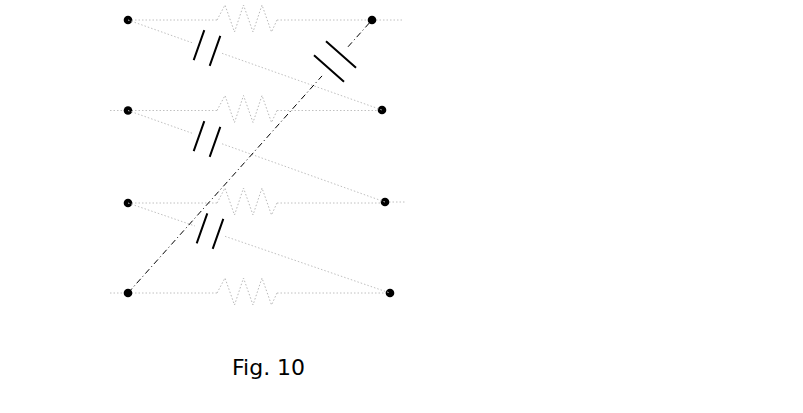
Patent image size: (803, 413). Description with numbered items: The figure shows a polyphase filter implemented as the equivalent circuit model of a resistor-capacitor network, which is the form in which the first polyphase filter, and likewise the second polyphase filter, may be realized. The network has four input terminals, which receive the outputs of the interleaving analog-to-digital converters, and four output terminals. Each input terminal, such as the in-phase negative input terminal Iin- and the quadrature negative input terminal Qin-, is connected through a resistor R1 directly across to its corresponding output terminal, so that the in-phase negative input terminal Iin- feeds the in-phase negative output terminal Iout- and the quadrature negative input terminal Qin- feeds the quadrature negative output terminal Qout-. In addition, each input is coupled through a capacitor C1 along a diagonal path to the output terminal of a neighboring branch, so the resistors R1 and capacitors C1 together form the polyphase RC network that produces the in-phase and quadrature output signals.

The resistor R1 is at (266, 163).
The capacitor C1 is at (259, 156).
The in-phase negative input terminal Iin- is at (95, 203).
The quadrature negative input terminal Qin- is at (91, 294).
The in-phase negative output terminal Iout- is at (435, 196).
The quadrature negative output terminal Qout- is at (436, 287).